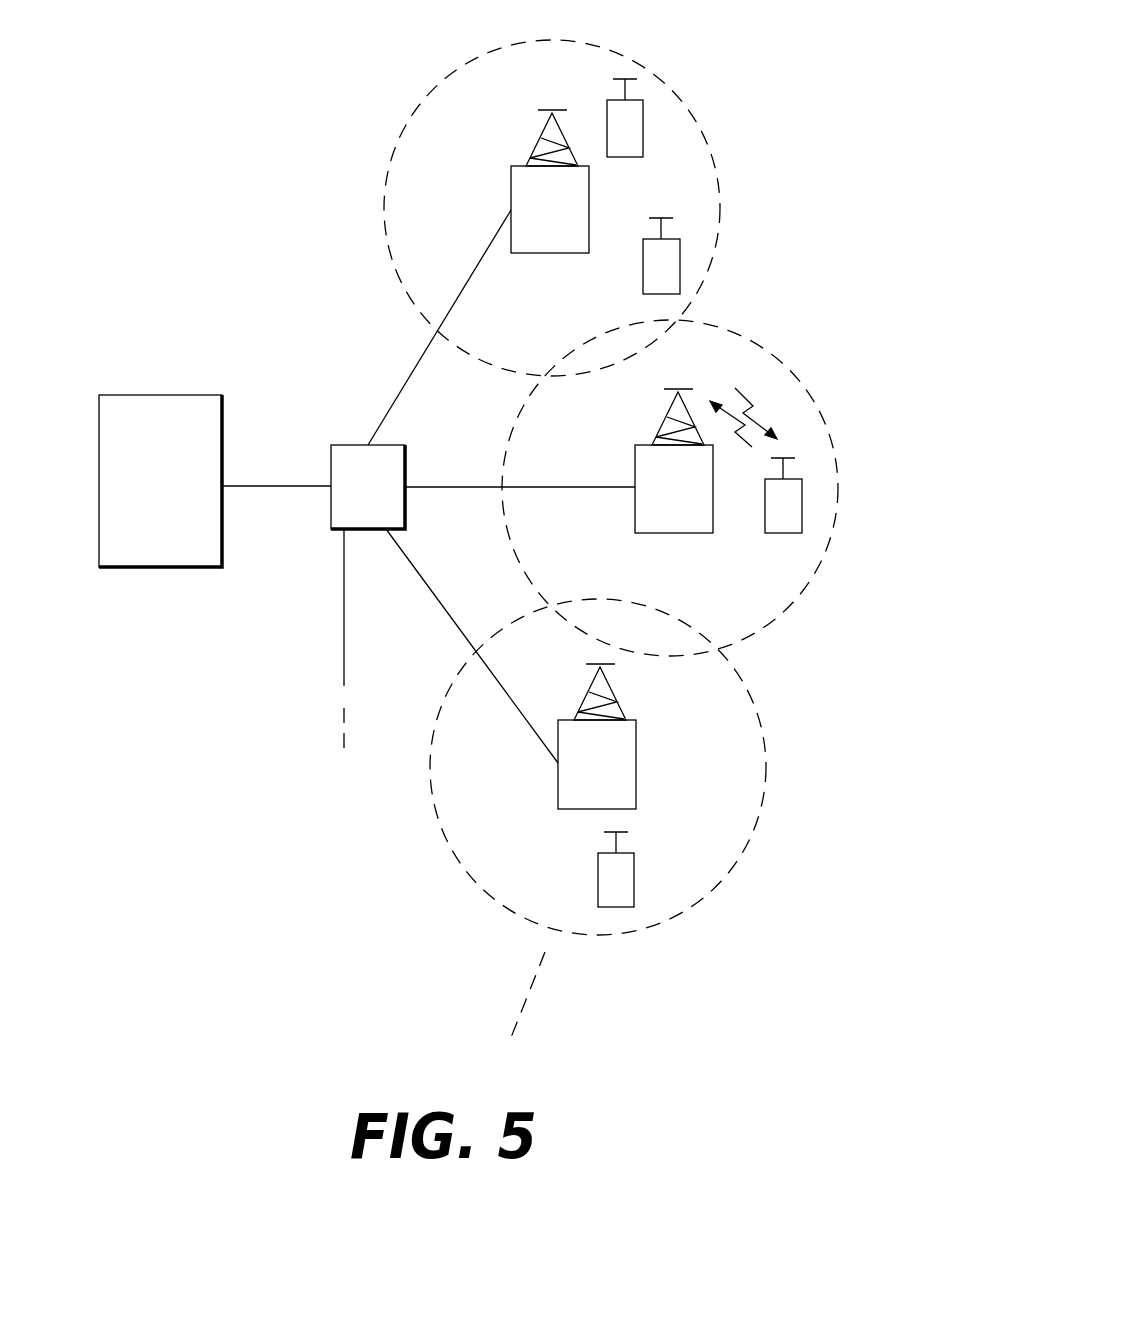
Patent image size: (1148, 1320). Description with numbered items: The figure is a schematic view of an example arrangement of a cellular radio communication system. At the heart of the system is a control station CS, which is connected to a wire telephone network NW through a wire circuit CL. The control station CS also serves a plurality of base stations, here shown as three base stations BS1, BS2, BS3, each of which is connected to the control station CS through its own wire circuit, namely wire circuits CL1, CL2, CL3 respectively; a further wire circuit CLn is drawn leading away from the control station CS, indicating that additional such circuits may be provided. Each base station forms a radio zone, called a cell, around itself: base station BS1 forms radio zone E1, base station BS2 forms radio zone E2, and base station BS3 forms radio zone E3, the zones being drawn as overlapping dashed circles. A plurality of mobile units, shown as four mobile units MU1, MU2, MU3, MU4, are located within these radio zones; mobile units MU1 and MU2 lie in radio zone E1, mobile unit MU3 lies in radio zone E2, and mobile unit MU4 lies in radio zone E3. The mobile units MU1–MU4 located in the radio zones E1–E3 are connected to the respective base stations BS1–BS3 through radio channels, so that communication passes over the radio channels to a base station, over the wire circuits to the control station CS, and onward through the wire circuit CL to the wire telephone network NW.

The wire telephone network NW is at (188, 395).
The control station CS is at (344, 445).
The wire circuit CL is at (296, 486).
The wire circuit CL1 is at (403, 378).
The wire circuit CL2 is at (447, 487).
The wire circuit CL3 is at (451, 620).
The communication line n CLn is at (344, 641).
The radio zone E1 is at (637, 55).
The radio zone E2 is at (817, 405).
The radio zone E3 is at (758, 714).
The base station BS1 is at (589, 198).
The base station BS2 is at (670, 533).
The base station BS3 is at (636, 777).
The mobile unit MU1 is at (643, 133).
The mobile unit MU2 is at (680, 265).
The mobile unit MU3 is at (802, 502).
The mobile unit MU4 is at (616, 907).